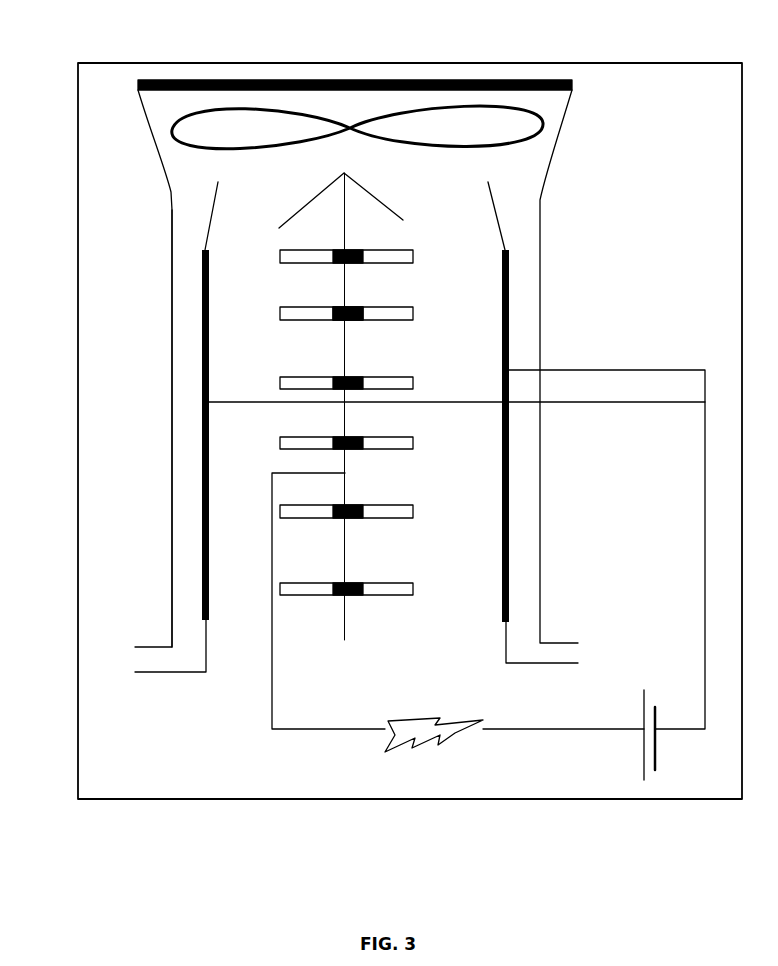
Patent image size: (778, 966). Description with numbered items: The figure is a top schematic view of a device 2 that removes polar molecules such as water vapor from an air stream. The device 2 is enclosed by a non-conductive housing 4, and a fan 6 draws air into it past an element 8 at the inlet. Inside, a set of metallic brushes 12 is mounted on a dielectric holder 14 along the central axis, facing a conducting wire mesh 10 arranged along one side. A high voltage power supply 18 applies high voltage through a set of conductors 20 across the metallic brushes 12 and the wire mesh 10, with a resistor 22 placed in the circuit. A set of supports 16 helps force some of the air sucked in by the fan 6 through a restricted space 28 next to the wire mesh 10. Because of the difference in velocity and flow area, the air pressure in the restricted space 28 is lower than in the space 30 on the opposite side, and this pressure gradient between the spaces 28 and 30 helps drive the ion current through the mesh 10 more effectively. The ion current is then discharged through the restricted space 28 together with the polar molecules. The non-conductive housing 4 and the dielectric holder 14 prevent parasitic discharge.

The device 2 is at (502, 792).
The non-conductive housing 4 is at (172, 315).
The fan 6 is at (548, 121).
The inlet grille 8 is at (381, 80).
The conducting wire mesh 10 is at (509, 298).
The set of metallic brushes 12 is at (380, 443).
The dielectric holder 14 is at (338, 316).
The set of supports 16 is at (215, 221).
The high voltage power supply 18 is at (626, 715).
The set of conductors 20 is at (270, 682).
The resistor 22 is at (418, 718).
The restricted space 28 is at (532, 532).
The space 30 is at (237, 508).